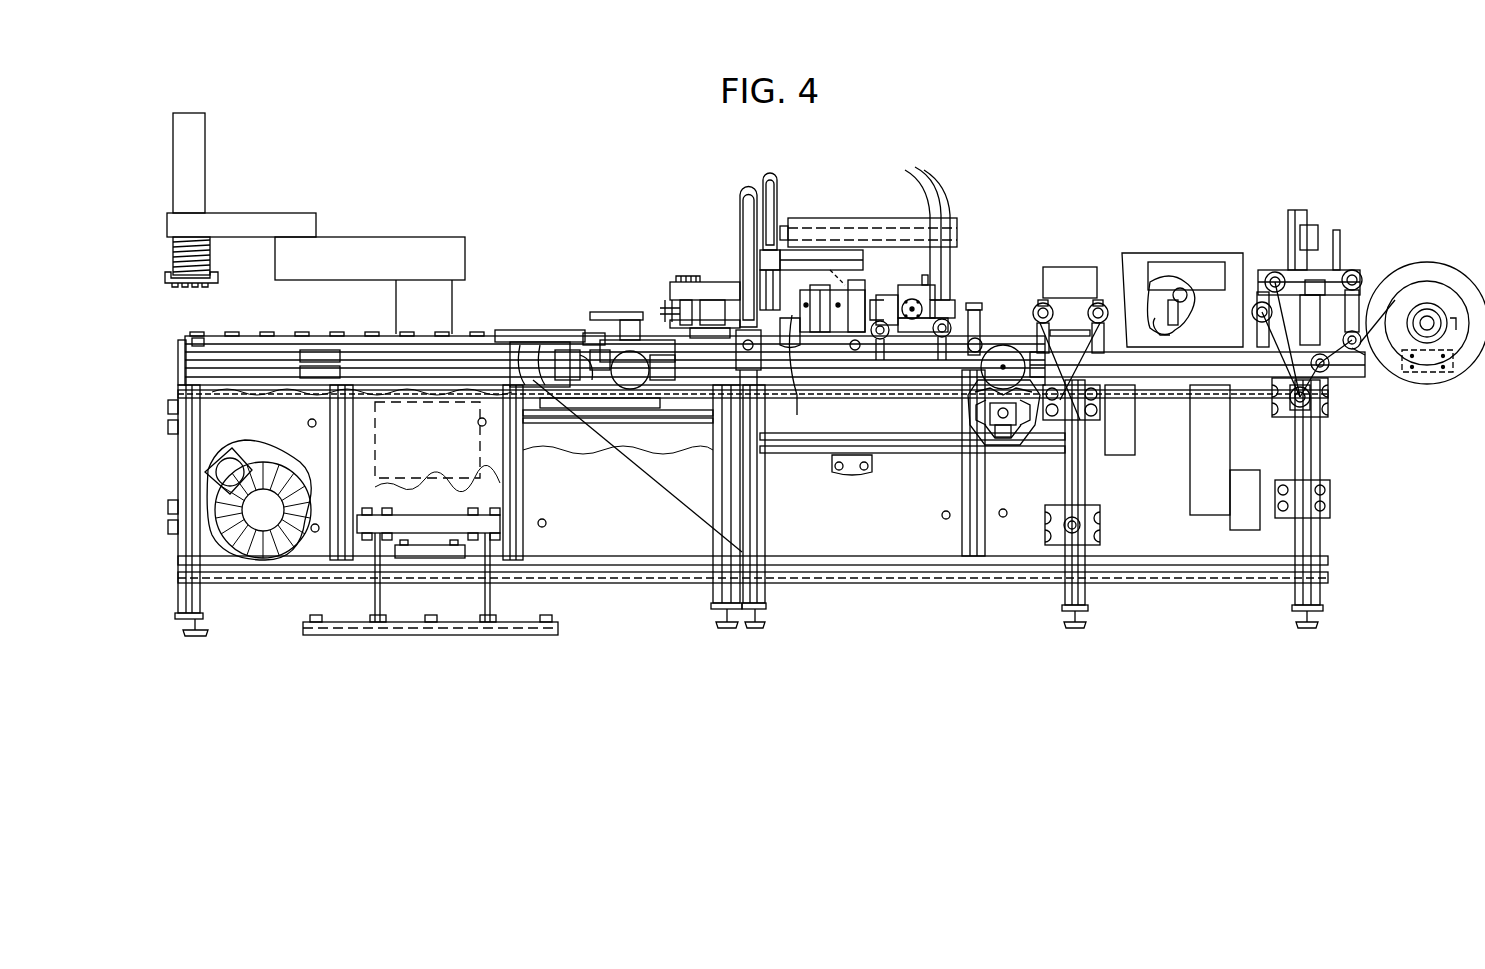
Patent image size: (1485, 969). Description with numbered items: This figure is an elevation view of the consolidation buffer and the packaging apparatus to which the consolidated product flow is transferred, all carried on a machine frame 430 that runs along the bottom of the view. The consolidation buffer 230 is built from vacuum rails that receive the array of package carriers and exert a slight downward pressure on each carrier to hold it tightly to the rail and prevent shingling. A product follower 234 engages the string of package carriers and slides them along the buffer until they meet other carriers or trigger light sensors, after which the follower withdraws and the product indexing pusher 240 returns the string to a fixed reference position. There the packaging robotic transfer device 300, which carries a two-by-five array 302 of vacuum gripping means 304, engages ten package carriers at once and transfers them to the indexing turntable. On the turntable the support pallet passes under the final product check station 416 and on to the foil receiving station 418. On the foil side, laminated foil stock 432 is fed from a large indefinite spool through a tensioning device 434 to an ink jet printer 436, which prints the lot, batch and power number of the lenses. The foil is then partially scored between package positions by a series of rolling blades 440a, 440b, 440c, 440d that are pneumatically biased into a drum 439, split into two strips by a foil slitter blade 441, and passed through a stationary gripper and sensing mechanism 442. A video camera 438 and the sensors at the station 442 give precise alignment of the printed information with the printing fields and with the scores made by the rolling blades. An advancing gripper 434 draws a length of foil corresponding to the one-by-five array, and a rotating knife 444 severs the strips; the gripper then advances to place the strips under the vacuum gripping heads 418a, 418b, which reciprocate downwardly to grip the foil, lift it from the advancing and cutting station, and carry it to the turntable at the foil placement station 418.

The consolidation buffer 230 is at (349, 333).
The product follower 234 is at (195, 338).
The product indexing pusher 240 is at (553, 330).
The packaging robotic transfer device 300 is at (440, 233).
The 2×5 array 302 is at (205, 283).
The vacuum gripping means 304 is at (183, 285).
The final product check station 416 is at (688, 275).
The foil receiving station 418 is at (695, 318).
The vacuum gripping head 418a is at (742, 245).
The vacuum gripping head 418b is at (769, 178).
The machine frame 430 is at (1031, 650).
The laminated foil stock 432 is at (1418, 262).
The tensioning device / advancing gripper 434 is at (745, 390).
The ink jet printer 436 is at (1178, 252).
The video camera 438 is at (1092, 295).
The drum 439 is at (1010, 358).
The rolling blade 440a is at (965, 418).
The rolling blade 440b is at (990, 425).
The rolling blade 440c is at (1020, 440).
The rolling blade 440d is at (1022, 430).
The foil slitter blade 441 is at (945, 320).
The stationary gripper and sensing mechanism 442 is at (925, 283).
The rotating knife 444 is at (822, 287).